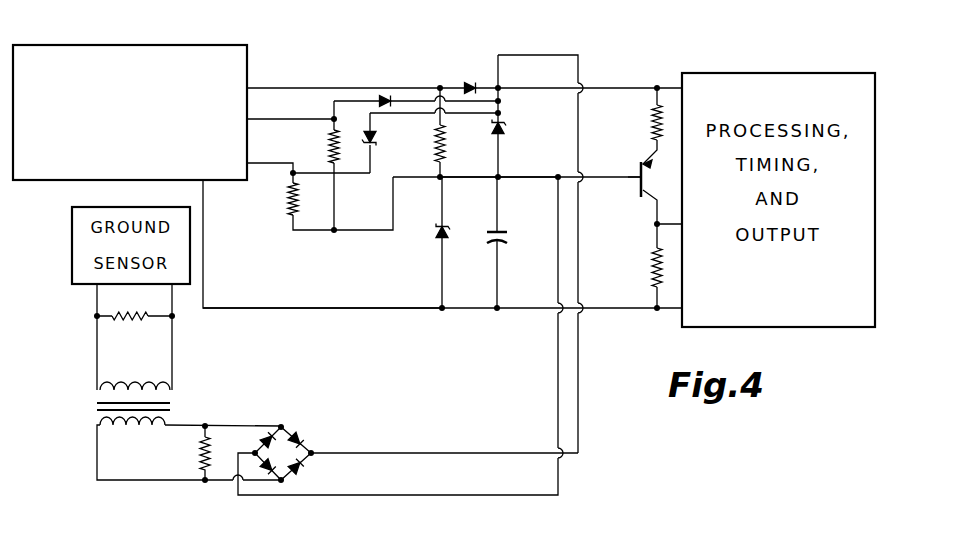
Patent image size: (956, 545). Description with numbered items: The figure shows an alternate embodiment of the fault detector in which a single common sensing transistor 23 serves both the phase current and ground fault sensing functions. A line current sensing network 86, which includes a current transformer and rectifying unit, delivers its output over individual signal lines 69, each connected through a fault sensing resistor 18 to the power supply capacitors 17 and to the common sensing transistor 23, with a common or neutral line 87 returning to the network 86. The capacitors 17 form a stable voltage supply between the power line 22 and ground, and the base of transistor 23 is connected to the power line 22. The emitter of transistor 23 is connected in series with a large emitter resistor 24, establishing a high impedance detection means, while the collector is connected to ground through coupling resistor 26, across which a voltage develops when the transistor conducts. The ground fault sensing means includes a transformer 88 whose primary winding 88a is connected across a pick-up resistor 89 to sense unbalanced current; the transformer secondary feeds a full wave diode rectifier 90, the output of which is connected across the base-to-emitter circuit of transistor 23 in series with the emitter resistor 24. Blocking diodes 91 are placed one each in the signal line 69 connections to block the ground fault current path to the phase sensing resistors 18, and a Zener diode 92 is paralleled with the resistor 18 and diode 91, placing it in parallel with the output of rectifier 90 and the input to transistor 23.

The line current sensing network 86 is at (230, 111).
The signal lines 69 is at (365, 88).
The blocking diodes 91 is at (471, 80).
The Zener diode 92 is at (507, 128).
The fault sensing resistor 18 is at (330, 141).
The power line 22 is at (507, 180).
The capacitors 17 is at (509, 240).
The resistor 24 is at (651, 131).
The fault sensing transistor 23 is at (648, 188).
The coupling resistor 26 is at (651, 270).
The common or neutral line 87 is at (322, 308).
The pick-up resistor 89 is at (142, 311).
The transformer 88 is at (189, 412).
The primary winding 88a is at (152, 383).
The full wave diode rectifier 90 is at (295, 431).